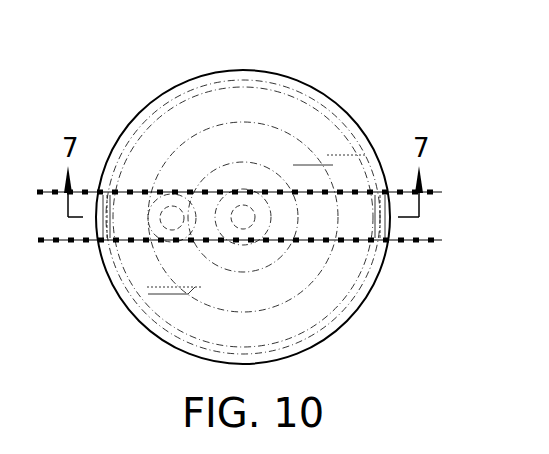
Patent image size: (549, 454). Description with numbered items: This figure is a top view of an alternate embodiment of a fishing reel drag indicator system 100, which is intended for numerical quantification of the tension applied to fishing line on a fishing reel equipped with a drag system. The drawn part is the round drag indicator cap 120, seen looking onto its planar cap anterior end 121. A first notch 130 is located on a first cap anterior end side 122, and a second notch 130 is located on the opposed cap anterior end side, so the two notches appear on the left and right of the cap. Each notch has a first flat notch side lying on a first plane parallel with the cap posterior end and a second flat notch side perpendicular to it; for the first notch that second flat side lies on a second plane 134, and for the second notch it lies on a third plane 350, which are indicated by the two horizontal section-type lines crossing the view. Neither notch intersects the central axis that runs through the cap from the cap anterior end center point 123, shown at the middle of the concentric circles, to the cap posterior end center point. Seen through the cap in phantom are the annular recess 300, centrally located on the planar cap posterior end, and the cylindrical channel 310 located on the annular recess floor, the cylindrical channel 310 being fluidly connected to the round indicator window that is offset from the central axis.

The fishing reel drag indicator system 100 is at (516, 452).
The drag indicator cap 120 is at (351, 110).
The planar cap anterior end 121 is at (132, 219).
The first cap anterior end side 122 is at (293, 76).
The cap anterior end center point 123 is at (242, 218).
The notch 130 is at (131, 152).
The second plane 134 is at (441, 192).
The annular recess 300 is at (205, 108).
The cylindrical channel 310 is at (172, 212).
The third plane 350 is at (447, 242).